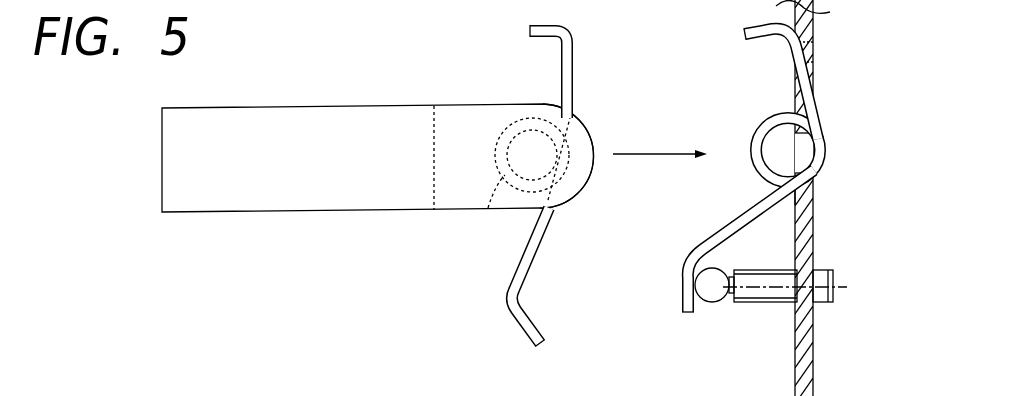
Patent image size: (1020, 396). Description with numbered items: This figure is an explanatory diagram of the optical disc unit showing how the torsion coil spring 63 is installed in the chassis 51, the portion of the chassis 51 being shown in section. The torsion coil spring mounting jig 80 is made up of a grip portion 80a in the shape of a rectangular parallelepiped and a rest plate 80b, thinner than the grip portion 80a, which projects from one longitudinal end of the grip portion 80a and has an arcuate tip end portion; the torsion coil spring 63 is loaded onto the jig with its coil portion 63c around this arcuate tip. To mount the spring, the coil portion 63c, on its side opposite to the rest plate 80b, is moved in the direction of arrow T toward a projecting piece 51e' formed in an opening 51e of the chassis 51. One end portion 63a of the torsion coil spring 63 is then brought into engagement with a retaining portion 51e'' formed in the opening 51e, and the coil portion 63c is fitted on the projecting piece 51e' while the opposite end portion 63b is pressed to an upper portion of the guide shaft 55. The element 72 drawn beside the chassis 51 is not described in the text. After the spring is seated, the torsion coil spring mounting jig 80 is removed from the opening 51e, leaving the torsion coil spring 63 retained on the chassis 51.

The torsion coil spring mounting jig 80 is at (378, 175).
The grip portion 80a is at (335, 128).
The rest plate 80b is at (468, 118).
The torsion coil spring 63 is at (638, 204).
The one end portion 63a is at (565, 58).
The opposite end portion 63b is at (530, 323).
The coil portion 63c is at (488, 208).
The chassis 51 is at (815, 198).
The opening 51e is at (846, 202).
The projecting piece 51e' is at (851, 153).
The retaining portion 51e'' is at (847, 53).
The guide shaft 55 is at (712, 298).
The nut 72 is at (829, 313).
The direction of arrow T is at (636, 153).